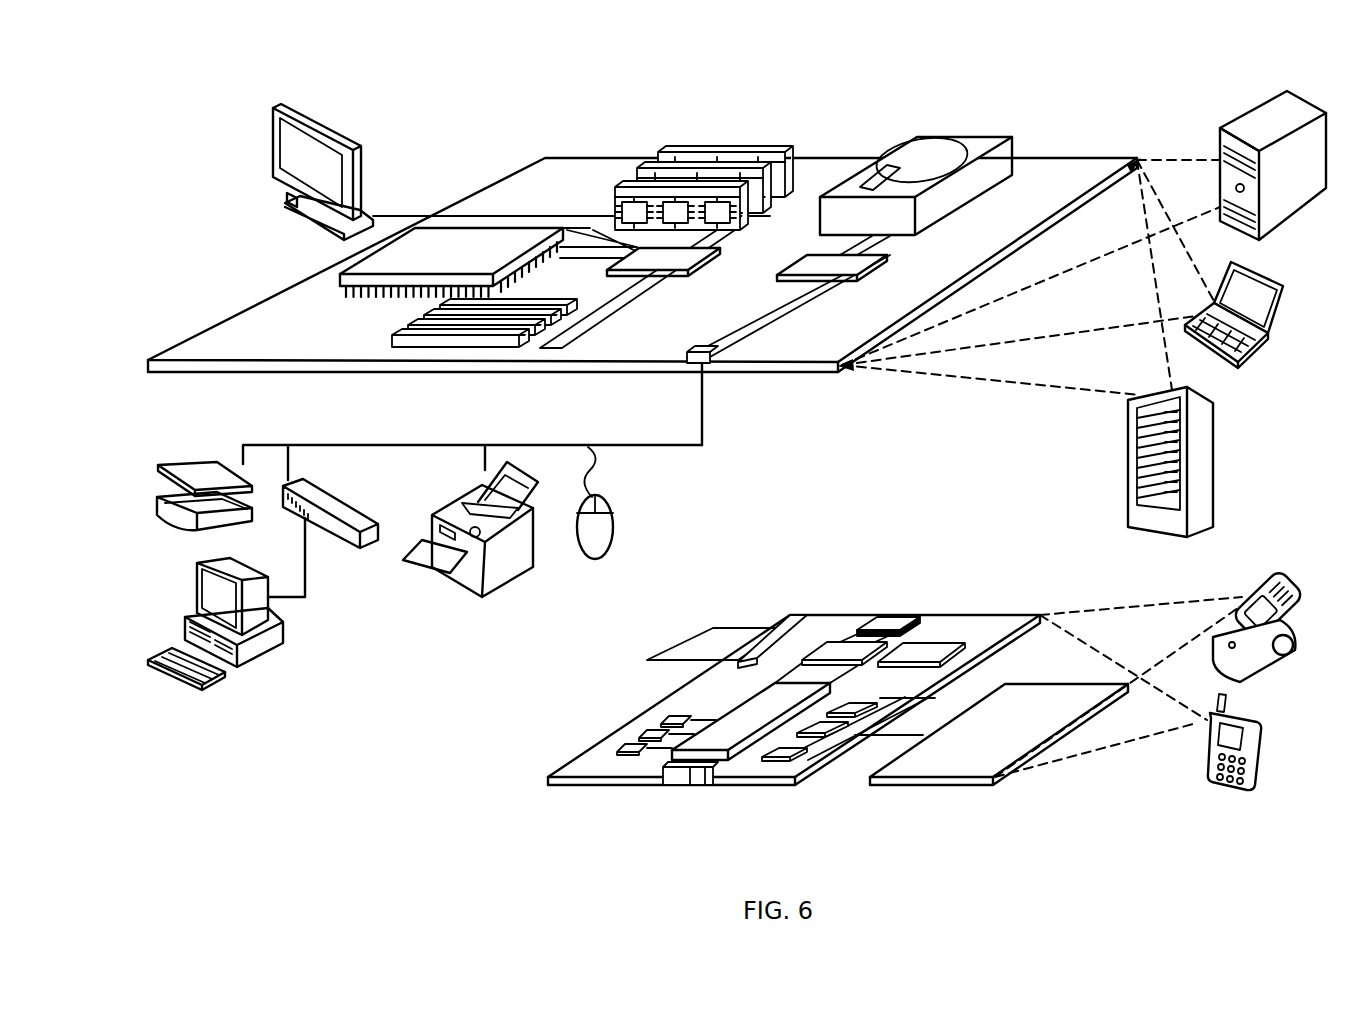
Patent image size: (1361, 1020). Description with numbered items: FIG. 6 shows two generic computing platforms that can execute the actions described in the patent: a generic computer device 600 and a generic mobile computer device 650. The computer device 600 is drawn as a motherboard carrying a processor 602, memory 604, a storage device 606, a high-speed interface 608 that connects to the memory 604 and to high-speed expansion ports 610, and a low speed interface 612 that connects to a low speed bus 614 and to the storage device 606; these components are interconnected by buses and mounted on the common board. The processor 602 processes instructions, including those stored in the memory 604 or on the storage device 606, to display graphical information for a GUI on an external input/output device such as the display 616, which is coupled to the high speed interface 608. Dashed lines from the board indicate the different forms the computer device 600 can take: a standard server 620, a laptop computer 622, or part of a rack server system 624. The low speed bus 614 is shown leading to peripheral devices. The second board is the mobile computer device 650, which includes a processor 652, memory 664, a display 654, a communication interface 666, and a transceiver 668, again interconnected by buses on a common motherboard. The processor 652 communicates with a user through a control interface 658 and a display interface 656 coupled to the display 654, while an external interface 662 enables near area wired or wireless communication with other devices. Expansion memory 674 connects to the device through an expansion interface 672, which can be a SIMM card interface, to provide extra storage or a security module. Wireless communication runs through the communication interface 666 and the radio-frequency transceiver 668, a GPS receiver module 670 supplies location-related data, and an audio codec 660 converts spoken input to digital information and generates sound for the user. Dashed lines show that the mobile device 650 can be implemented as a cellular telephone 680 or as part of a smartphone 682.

The generic computer device 600 is at (470, 136).
The processor 602 is at (347, 277).
The memory 604 is at (672, 152).
The storage device 606 is at (906, 147).
The high-speed interface 608 is at (642, 258).
The high-speed expansion ports 610 is at (417, 333).
The low speed interface 612 is at (815, 262).
The low speed bus 614 is at (717, 362).
The display 616 is at (273, 106).
The standard server 620 is at (1221, 138).
The laptop computer 622 is at (1290, 288).
The rack server system 624 is at (1128, 487).
The generic mobile computer device 650 is at (527, 784).
The processor 652 is at (723, 745).
The display 654 is at (960, 762).
The display interface 656 is at (793, 753).
The control interface 658 is at (827, 730).
The audio codec 660 is at (852, 710).
The external interface 662 is at (688, 778).
The memory 664 is at (650, 733).
The communication interface 666 is at (842, 653).
The transceiver 668 is at (923, 652).
The GPS receiver module 670 is at (890, 615).
The expansion interface 672 is at (775, 630).
The expansion memory 674 is at (692, 630).
The cellular telephone 680 is at (1262, 583).
The smartphone 682 is at (1210, 752).